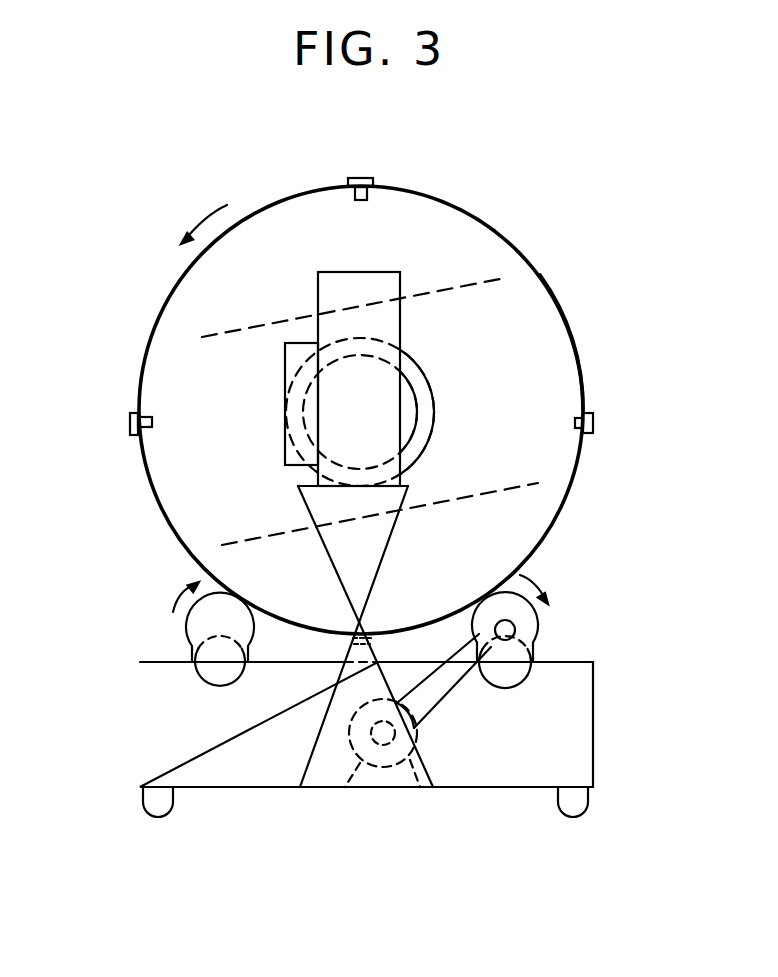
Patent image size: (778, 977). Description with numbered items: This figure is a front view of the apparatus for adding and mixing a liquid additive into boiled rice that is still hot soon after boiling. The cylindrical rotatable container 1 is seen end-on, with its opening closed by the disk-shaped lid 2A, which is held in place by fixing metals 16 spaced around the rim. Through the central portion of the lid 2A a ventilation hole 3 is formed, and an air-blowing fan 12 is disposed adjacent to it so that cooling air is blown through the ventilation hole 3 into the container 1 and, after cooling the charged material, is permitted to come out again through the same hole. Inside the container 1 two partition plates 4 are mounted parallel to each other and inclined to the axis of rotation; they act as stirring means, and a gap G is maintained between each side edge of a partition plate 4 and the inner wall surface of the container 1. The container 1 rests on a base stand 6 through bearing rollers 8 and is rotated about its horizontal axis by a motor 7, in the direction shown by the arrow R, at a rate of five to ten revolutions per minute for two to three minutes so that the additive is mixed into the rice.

The rotatable container 1 is at (520, 250).
The lid 2A is at (537, 317).
The ventilation hole 3 is at (413, 425).
The partition plate 4 is at (452, 287).
The base stand 6 is at (269, 768).
The motor 7 is at (378, 770).
The bearing rollers 8 is at (185, 615).
The air-blowing fan 12 is at (397, 333).
The fixing metals 16 is at (130, 420).
The gap G is at (180, 327).
The arrow indicating direction of rotation R is at (204, 212).